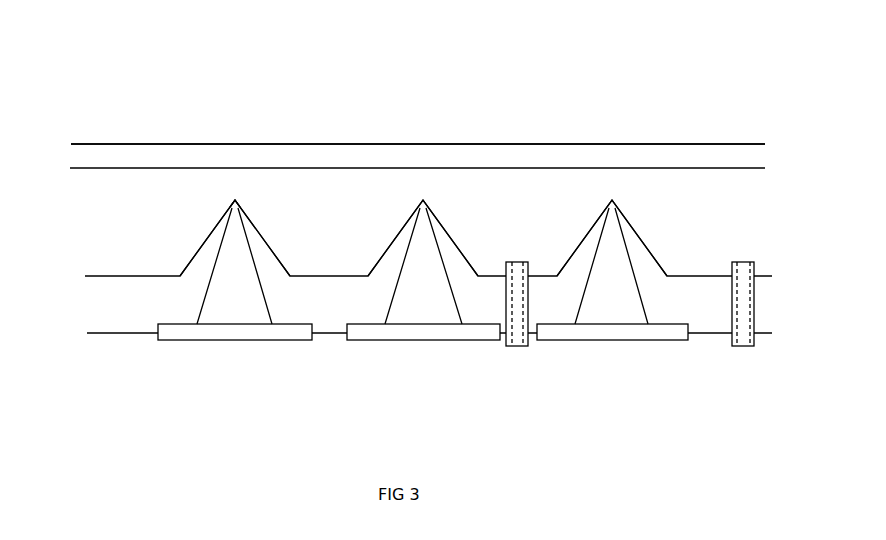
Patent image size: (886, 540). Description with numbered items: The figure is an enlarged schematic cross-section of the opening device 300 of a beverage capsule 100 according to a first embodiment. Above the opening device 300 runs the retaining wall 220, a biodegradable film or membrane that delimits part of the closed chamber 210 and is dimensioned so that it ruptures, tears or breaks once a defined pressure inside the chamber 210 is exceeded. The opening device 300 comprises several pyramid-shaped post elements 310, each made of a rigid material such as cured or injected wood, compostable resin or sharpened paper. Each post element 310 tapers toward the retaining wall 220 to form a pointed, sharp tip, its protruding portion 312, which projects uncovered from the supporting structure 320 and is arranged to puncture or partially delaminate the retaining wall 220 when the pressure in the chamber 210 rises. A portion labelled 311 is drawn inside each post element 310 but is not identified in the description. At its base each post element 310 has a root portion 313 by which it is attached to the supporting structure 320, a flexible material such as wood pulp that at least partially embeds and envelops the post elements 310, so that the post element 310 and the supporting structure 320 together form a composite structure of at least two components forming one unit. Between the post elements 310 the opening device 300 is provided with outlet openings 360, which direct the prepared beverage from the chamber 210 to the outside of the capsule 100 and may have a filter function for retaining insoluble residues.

The capsule 100 is at (114, 52).
The chamber 210 is at (423, 117).
The retaining wall 220 is at (208, 157).
The opening device 300 is at (78, 212).
The post element 310 is at (197, 249).
The light emitting body 311 is at (225, 297).
The protruding portion 312 is at (234, 215).
The root portion 313 is at (183, 340).
The supporting structure 320 is at (485, 290).
The outlet opening 360 is at (513, 343).